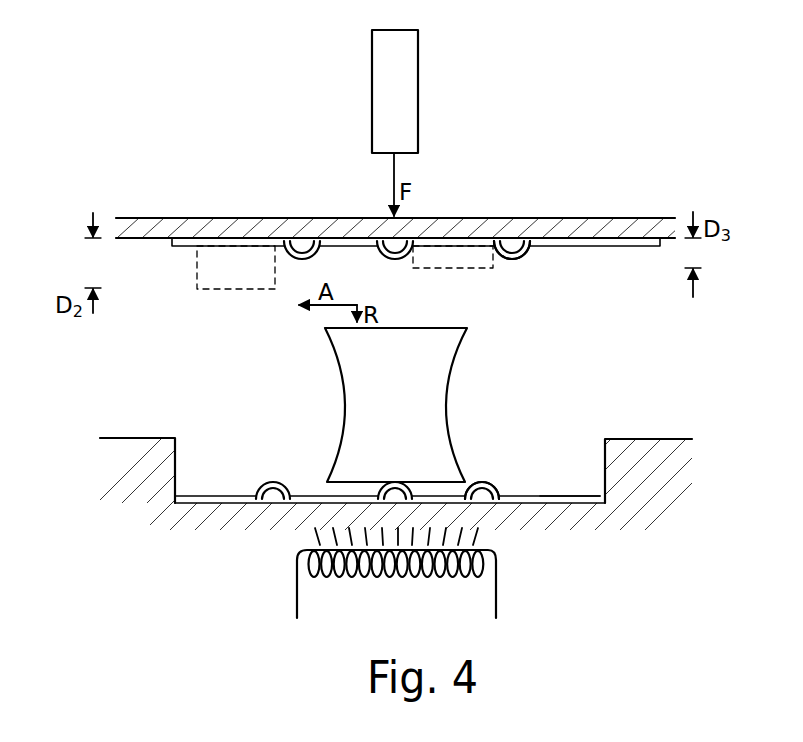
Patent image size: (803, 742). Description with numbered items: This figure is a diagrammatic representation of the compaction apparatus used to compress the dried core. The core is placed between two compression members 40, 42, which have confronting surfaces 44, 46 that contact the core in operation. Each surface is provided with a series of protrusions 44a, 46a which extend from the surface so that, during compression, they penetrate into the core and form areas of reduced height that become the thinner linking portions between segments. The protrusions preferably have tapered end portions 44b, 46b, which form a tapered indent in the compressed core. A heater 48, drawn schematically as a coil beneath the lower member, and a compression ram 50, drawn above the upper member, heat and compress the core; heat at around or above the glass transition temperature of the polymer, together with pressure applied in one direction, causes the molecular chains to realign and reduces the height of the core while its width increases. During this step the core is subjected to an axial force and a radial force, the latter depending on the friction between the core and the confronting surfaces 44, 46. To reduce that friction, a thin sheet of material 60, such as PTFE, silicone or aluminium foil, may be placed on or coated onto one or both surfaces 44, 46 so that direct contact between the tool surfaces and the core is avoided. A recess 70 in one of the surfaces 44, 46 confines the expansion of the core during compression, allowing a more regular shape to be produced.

The compression member 40 is at (570, 222).
The confronting surface 44 is at (626, 238).
The protrusions 44a is at (297, 240).
The tapered end portion 44b is at (525, 256).
The compression ram 50 is at (403, 85).
The compression member 42 is at (193, 513).
The confronting surface 46 is at (587, 502).
The protrusions 46a is at (272, 503).
The tapered end portion 46b is at (488, 483).
The heater 48 is at (497, 600).
The sheet of material 60 is at (237, 247).
The recess 70 is at (576, 483).